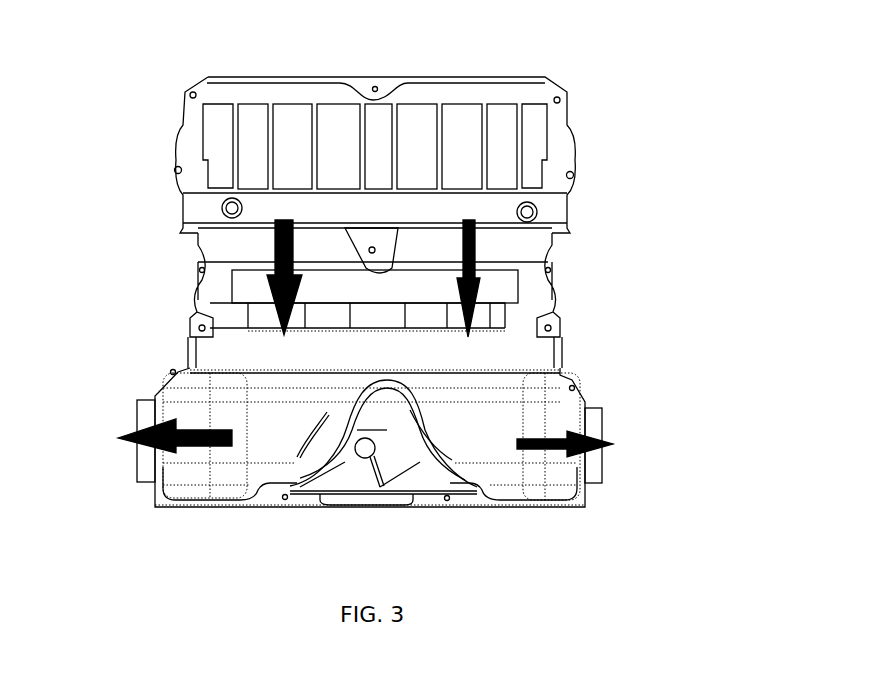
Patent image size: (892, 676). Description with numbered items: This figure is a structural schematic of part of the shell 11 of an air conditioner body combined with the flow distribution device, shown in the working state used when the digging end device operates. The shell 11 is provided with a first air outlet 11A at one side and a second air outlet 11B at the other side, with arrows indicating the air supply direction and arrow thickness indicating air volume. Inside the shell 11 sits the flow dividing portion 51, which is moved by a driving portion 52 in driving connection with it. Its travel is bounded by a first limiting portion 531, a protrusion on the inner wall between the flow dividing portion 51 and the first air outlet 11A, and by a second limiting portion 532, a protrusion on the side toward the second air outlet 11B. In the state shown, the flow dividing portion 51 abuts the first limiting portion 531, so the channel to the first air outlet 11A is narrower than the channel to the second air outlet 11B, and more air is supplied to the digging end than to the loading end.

The shell 11 is at (528, 283).
The first air outlet 11A is at (590, 460).
The second air outlet 11B is at (148, 460).
The flow dividing portion 51 is at (420, 480).
The driving portion 52 is at (365, 453).
The first limiting portion 531 is at (427, 437).
The second limiting portion 532 is at (310, 433).